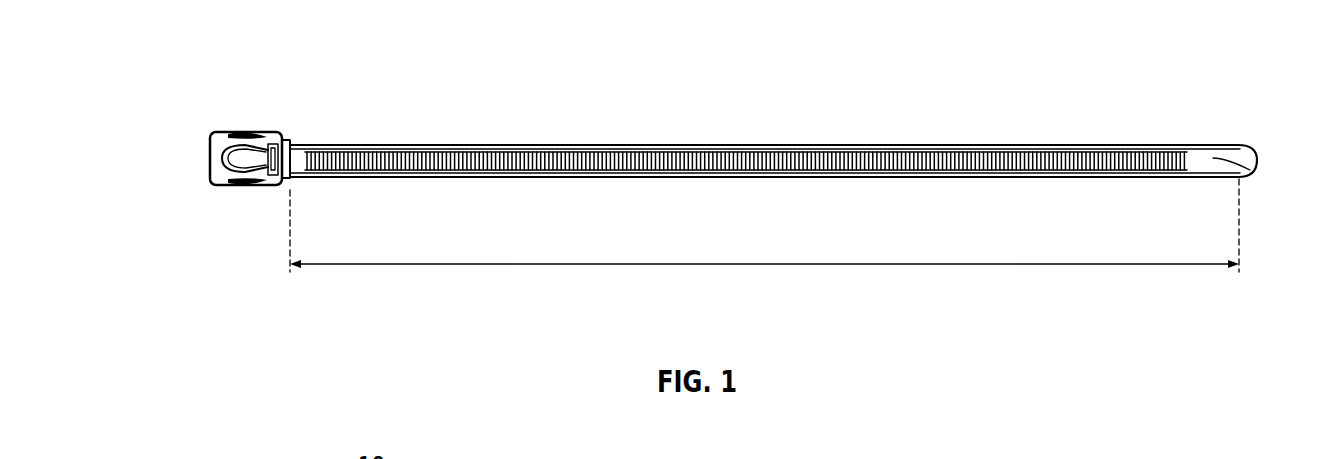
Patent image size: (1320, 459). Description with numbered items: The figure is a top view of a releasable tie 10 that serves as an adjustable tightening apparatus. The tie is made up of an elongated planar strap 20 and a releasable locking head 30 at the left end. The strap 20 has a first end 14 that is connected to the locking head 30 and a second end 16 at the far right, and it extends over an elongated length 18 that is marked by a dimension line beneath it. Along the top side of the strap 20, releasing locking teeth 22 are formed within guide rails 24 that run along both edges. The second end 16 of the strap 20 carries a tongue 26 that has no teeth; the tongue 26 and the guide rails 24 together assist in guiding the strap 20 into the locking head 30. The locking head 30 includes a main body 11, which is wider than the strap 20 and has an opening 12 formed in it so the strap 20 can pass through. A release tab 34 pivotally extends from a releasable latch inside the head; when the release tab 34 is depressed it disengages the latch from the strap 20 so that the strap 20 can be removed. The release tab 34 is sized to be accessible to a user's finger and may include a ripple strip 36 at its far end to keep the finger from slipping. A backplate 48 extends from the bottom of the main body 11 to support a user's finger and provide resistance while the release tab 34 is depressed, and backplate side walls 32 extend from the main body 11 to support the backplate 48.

The releasable tie 10 is at (392, 43).
The main body 11 is at (283, 140).
The opening 12 is at (270, 183).
The first end 14 is at (300, 150).
The second end 16 is at (1247, 150).
The elongated length 18 is at (785, 266).
The elongated planar strap 20 is at (795, 127).
The releasing locking teeth 22 is at (790, 165).
The guide rails 24 is at (702, 147).
The tongue 26 is at (1248, 174).
The releasable locking head 30 is at (213, 197).
The backplate side walls 32 is at (240, 190).
The release tab 34 is at (232, 133).
The ripple strip 36 is at (230, 157).
The backplate 48 is at (212, 147).